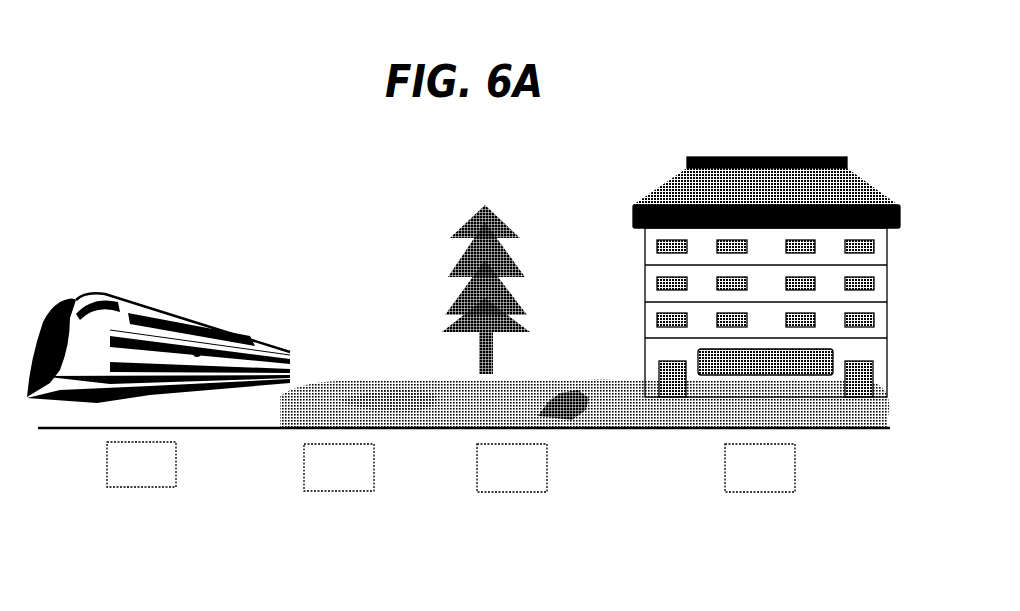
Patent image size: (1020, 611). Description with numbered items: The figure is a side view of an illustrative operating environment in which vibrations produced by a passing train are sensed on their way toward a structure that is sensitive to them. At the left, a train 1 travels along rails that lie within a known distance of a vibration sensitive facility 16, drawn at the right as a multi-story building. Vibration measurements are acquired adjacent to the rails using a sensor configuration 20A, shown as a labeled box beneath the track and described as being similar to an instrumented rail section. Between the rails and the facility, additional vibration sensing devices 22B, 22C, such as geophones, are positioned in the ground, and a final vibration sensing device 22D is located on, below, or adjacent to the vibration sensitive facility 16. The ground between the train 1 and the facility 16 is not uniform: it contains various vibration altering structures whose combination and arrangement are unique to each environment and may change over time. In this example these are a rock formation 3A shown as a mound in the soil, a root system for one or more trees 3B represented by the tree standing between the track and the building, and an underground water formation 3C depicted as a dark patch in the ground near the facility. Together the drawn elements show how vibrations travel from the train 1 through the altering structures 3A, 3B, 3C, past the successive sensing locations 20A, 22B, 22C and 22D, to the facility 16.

The train 1 is at (192, 292).
The rock formation 3A is at (408, 397).
The root system for one or more trees 3B is at (460, 262).
The underground water formation 3C is at (567, 390).
The vibration sensitive facility 16 is at (758, 157).
The sensor configuration 20A is at (141, 464).
The vibration sensing device 22B is at (339, 467).
The vibration sensing device 22C is at (512, 468).
The final vibration sensing device 22D is at (760, 468).